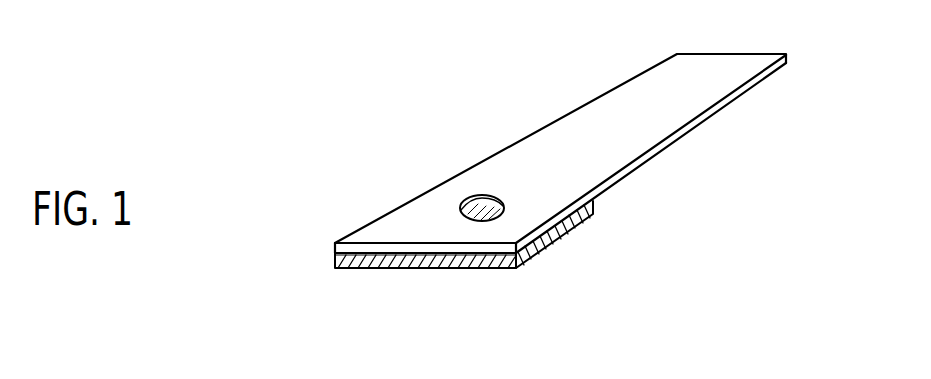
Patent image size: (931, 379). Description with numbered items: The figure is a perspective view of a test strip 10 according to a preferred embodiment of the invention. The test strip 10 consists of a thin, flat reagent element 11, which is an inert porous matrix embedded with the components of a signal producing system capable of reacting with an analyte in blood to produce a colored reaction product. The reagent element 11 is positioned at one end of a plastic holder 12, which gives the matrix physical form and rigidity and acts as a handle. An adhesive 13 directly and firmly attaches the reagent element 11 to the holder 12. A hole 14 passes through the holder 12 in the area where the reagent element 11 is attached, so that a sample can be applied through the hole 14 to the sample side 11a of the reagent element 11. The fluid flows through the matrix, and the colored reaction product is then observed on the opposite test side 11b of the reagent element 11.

The test strip 10 is at (691, 132).
The reagent element 11 is at (474, 269).
The sample application side 11a is at (475, 200).
The test side 11b is at (450, 269).
The holder 12 is at (756, 81).
The adhesive 13 is at (594, 202).
The hole 14 is at (452, 162).